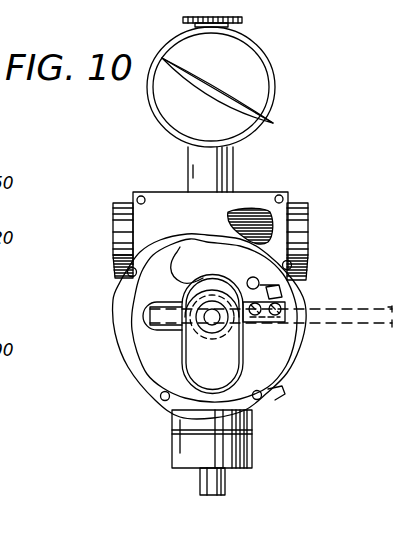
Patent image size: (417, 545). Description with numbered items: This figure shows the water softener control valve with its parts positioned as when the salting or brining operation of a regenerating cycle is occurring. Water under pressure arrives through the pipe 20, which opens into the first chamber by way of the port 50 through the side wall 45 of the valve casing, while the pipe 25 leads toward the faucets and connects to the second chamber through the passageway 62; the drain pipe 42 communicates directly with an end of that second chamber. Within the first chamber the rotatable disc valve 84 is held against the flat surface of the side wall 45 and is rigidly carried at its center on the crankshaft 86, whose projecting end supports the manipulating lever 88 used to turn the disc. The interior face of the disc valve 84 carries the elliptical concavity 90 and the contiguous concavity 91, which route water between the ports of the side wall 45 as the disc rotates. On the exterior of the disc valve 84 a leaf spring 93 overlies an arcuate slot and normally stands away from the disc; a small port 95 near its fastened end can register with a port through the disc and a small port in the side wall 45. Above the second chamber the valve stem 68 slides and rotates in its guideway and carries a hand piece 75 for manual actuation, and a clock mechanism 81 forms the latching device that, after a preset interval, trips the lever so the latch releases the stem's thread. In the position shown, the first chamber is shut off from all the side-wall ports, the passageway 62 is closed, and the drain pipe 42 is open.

The pipe 20 is at (298, 217).
The pipe 25 is at (118, 249).
The drain pipe 42 is at (249, 454).
The side wall 45 is at (263, 195).
The port 50 is at (286, 242).
The passageway 62 is at (118, 220).
The valve stem 68 is at (210, 485).
The hand piece 75 is at (247, 22).
The clock mechanism 81 is at (167, 110).
The rotatable disc valve 84 is at (160, 363).
The crankshaft 86 is at (223, 330).
The manipulating lever 88 is at (367, 319).
The elliptical concavity 90 is at (220, 363).
The concavity 91 is at (135, 326).
The leaf spring 93 is at (183, 273).
The small port 95 is at (258, 283).